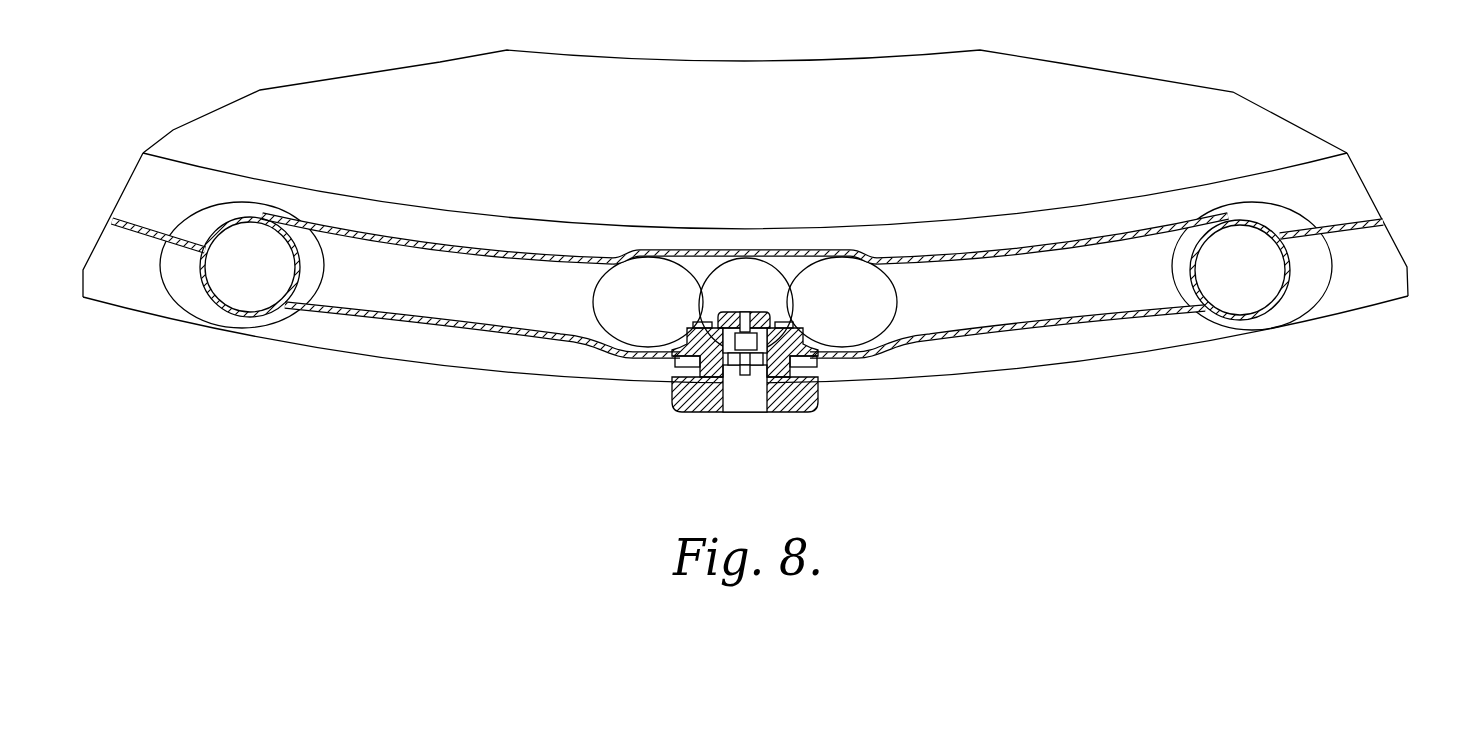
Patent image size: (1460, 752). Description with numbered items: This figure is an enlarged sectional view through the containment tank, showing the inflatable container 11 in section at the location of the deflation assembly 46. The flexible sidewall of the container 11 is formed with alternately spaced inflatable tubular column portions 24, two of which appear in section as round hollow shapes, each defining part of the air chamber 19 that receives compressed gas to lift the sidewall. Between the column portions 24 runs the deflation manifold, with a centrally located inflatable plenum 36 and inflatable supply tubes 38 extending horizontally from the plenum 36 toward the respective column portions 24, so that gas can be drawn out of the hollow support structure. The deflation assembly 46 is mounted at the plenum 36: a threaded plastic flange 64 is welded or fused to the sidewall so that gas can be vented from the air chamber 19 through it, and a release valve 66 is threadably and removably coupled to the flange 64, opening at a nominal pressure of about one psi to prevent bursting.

The inflatable container 11 is at (1355, 318).
The air chamber 19 is at (1240, 268).
The tubular column portions 24 is at (200, 283).
The inflatable plenum 36 is at (805, 253).
The inflatable supply tubes 38 is at (467, 247).
The deflation assembly 46 is at (743, 402).
The threaded plastic flange 64 is at (815, 362).
The release valve 66 is at (785, 403).